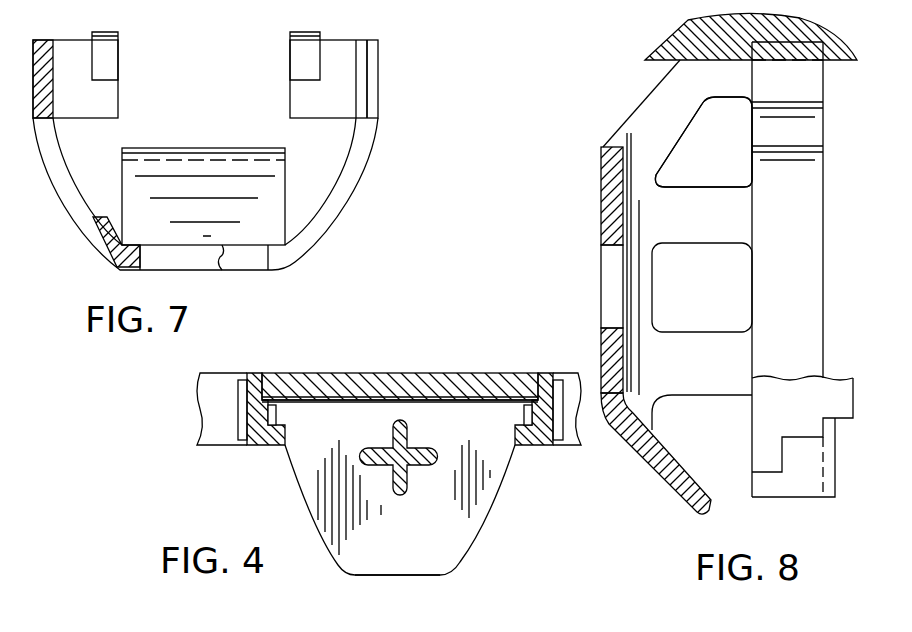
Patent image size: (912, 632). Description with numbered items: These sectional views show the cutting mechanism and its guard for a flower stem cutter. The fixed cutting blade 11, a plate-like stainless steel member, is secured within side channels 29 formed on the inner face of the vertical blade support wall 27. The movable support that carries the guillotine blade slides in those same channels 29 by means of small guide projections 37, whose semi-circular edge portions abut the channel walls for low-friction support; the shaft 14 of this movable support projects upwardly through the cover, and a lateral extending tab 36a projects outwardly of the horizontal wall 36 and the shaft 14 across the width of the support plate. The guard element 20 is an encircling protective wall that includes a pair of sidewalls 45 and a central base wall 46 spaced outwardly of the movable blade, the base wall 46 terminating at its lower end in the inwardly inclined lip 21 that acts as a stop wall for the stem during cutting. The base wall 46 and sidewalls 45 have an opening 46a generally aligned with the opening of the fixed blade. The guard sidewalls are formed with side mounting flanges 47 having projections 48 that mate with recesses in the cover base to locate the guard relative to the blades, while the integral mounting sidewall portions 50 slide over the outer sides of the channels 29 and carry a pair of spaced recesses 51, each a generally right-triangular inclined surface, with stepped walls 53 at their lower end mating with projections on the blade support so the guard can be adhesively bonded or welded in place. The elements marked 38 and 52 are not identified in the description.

In FIG. 4, the fixed cutting blade 11 is at (437, 402).
In FIG. 4, the shaft 14 is at (408, 475).
In FIG. 8, the guard element 20 is at (600, 207).
In FIG. 7, the inwardly projecting lip 21 is at (227, 161).
In FIG. 8, the inwardly projecting lip 21 is at (675, 488).
In FIG. 4, the vertical blade support wall 27 is at (455, 374).
In FIG. 8, the vertical blade support wall 27 is at (856, 375).
In FIG. 4, the side channels 29 is at (254, 380).
In FIG. 4, the horizontal wall 36 is at (318, 503).
In FIG. 4, the lateral extending tab 36a is at (393, 563).
In FIG. 4, the guide projections 37 is at (289, 398).
In FIG. 4, the clip 38 is at (278, 416).
In FIG. 7, the sidewalls 45 is at (342, 180).
In FIG. 4, the sidewalls 45 is at (215, 438).
In FIG. 8, the sidewalls 45 is at (707, 228).
In FIG. 7, the central base wall 46 is at (118, 268).
In FIG. 8, the central base wall 46 is at (612, 232).
In FIG. 8, the opening 46a is at (610, 269).
In FIG. 7, the side mounting flanges 47 is at (48, 101).
In FIG. 8, the side mounting flanges 47 is at (812, 237).
In FIG. 7, the projections 48 is at (358, 100).
In FIG. 8, the projections 48 is at (817, 50).
In FIG. 8, the mounting sidewall portions 50 is at (812, 133).
In FIG. 8, the recesses 51 is at (770, 142).
In FIG. 8, the base 52 is at (803, 487).
In FIG. 7, the stepped walls 53 is at (463, 10).
In FIG. 8, the stepped walls 53 is at (833, 400).